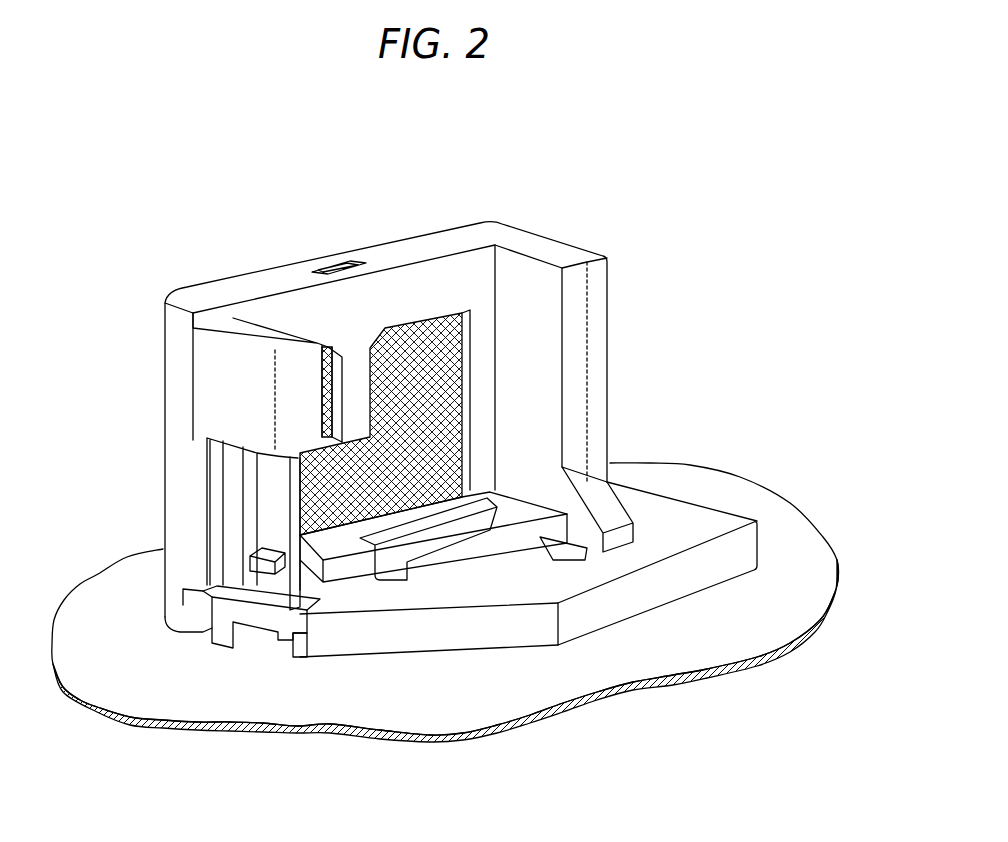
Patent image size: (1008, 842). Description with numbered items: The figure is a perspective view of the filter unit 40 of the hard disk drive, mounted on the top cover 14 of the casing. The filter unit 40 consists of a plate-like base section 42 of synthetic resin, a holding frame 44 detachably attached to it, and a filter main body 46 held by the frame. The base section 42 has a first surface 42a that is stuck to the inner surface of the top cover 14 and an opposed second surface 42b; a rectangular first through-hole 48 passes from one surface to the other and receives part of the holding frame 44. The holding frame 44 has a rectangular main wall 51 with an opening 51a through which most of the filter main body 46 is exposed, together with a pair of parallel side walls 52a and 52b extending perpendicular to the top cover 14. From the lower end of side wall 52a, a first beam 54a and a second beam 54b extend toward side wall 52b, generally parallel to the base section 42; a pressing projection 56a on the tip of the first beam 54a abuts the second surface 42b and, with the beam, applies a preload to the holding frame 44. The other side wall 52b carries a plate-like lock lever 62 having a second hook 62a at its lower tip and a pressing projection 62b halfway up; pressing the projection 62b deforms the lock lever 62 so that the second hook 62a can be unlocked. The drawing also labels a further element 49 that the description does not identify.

The top cover 14 is at (753, 628).
The filter unit 40 is at (697, 284).
The base section 42 is at (533, 574).
The first surface 42a is at (600, 630).
The second surface 42b is at (717, 520).
The holding frame 44 is at (385, 404).
The filter main body 46 is at (422, 338).
The first through-hole 48 is at (573, 558).
The bracket 49 is at (260, 650).
The main wall 51 is at (300, 300).
The opening 51a is at (467, 340).
The side wall 52a is at (578, 372).
The side wall 52b is at (180, 452).
The first beam 54a is at (443, 605).
The second beam 54b is at (343, 547).
The pressing projection 56a is at (400, 568).
The lock lever 62 is at (191, 524).
The second hook 62a is at (270, 640).
The pressing projection 62b is at (183, 547).